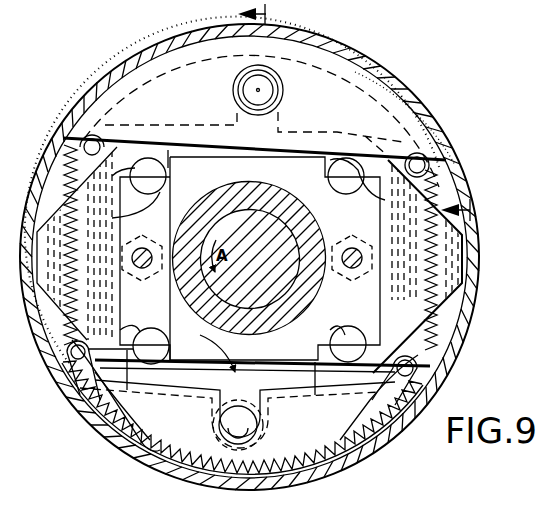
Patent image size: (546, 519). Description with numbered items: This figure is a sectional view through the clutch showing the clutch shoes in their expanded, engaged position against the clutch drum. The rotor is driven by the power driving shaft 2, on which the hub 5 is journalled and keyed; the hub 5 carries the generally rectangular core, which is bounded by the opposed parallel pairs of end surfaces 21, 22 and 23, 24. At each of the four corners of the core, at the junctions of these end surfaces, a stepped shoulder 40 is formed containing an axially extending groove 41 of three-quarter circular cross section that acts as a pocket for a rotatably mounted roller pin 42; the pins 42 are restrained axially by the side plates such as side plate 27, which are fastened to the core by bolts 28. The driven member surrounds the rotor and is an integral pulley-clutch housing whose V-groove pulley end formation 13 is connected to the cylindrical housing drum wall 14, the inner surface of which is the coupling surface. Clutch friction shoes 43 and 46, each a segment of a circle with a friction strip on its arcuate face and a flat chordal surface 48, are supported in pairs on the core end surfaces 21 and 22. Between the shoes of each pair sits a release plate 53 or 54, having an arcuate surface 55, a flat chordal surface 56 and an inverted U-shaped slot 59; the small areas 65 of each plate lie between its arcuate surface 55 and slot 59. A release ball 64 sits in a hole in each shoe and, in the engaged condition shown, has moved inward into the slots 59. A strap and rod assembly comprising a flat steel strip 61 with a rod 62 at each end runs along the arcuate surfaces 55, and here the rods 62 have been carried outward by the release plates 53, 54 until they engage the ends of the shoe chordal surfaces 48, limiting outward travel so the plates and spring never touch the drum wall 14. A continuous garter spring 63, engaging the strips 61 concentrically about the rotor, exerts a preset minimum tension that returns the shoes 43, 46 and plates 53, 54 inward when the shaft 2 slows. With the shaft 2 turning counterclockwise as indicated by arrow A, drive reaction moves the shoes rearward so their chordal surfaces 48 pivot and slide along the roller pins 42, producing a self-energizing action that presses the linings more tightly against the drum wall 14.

The power driving shaft 2 is at (275, 237).
The hub 5 is at (312, 290).
The V-groove pulley end formation 13 is at (368, 112).
The cylindrical housing drum wall 14 is at (50, 158).
The end surface 21 is at (200, 152).
The end surface 22 is at (278, 364).
The end surface 23 is at (77, 243).
The end surface 24 is at (402, 248).
The side plate 27 is at (440, 268).
The bolts 28 is at (141, 270).
The stepped shoulder 40 is at (130, 178).
The axially extending groove 41 is at (122, 216).
The roller pin 42 is at (328, 176).
The clutch friction shoe 43 is at (134, 106).
The clutch friction shoe 46 is at (205, 348).
The flat chordal surface 48 is at (170, 158).
The release plate 53 is at (388, 92).
The release plate 54 is at (360, 456).
The arcuate surface 55 is at (137, 440).
The flat chordal surface 56 is at (375, 418).
The inverted U-shaped slot 59 is at (340, 130).
The flat steel strip 61 is at (420, 116).
The rod 62 is at (92, 140).
The continuous garter spring 63 is at (66, 318).
The release ball 64 is at (262, 88).
The small portions or areas 65 is at (190, 473).